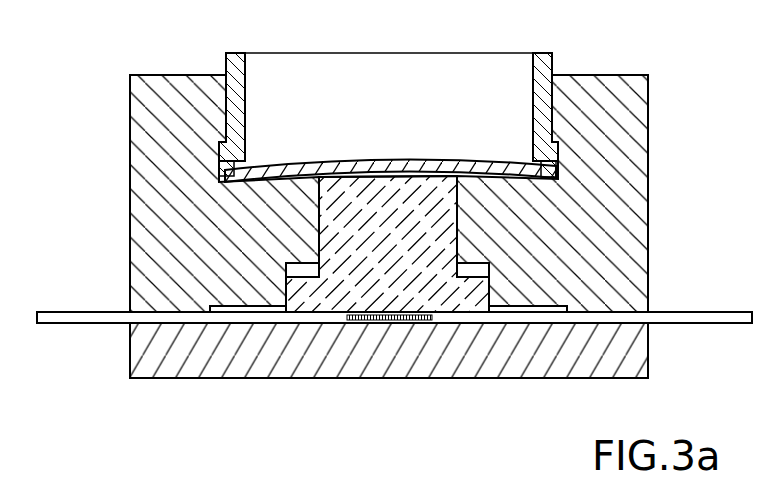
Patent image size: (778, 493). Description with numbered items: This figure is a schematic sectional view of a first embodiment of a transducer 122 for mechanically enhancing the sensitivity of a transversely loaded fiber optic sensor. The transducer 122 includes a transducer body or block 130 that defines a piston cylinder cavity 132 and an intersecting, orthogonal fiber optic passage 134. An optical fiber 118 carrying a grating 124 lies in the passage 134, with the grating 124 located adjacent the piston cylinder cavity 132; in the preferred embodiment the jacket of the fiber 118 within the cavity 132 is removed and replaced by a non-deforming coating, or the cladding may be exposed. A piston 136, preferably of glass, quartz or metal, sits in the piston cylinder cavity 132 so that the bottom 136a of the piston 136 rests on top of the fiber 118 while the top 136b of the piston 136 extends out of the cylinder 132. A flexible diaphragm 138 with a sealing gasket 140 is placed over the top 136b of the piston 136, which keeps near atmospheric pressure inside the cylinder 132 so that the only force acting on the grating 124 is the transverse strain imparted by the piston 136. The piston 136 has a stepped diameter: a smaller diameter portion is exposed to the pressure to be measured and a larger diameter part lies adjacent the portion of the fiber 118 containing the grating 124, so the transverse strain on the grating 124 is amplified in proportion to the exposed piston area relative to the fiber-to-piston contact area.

The optical fiber 118 is at (707, 324).
The transducer 122 is at (67, 250).
The grating 124 is at (383, 320).
The transducer body 130 is at (649, 140).
The piston cylinder cavity 132 is at (488, 262).
The fiber optic passage 134 is at (152, 308).
The piston 136 is at (340, 228).
The bottom of piston 136a is at (451, 313).
The top of piston 136b is at (403, 160).
The flexible diaphragm 138 is at (280, 165).
The sealing gasket 140 is at (542, 165).